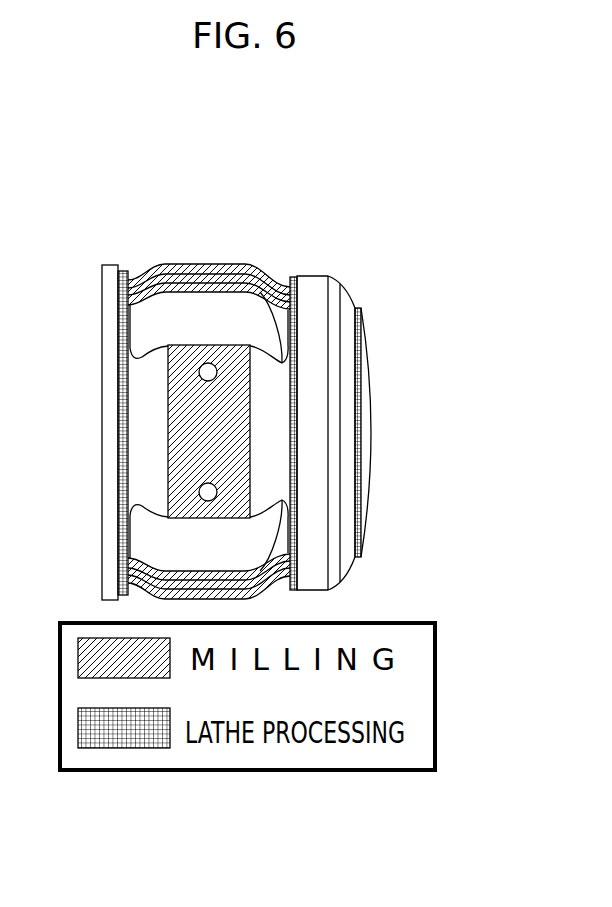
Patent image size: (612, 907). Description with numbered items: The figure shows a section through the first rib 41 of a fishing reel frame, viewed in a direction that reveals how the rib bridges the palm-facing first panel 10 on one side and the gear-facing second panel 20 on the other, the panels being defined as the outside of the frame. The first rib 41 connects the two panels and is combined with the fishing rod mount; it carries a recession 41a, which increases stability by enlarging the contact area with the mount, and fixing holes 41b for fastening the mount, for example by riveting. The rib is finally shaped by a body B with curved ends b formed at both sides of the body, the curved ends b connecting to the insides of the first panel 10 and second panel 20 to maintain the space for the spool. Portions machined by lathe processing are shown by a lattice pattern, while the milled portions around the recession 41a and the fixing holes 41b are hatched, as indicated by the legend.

The first panel 10 is at (354, 377).
The second panel 20 is at (95, 371).
The first rib 41 is at (234, 311).
The recession 41a is at (209, 341).
The fixing holes 41b is at (209, 364).
The body B is at (262, 292).
The curved ends b is at (140, 357).